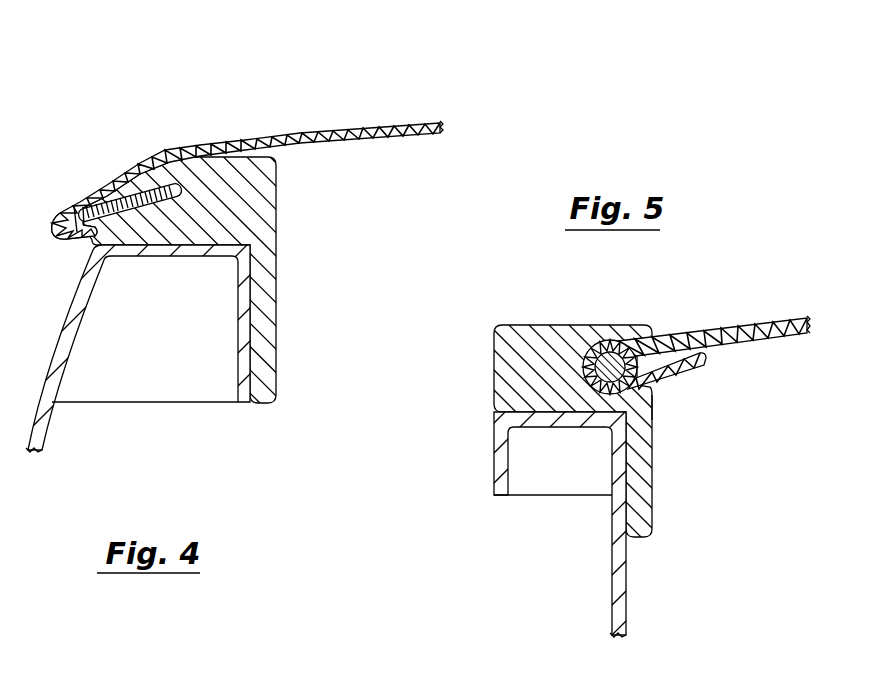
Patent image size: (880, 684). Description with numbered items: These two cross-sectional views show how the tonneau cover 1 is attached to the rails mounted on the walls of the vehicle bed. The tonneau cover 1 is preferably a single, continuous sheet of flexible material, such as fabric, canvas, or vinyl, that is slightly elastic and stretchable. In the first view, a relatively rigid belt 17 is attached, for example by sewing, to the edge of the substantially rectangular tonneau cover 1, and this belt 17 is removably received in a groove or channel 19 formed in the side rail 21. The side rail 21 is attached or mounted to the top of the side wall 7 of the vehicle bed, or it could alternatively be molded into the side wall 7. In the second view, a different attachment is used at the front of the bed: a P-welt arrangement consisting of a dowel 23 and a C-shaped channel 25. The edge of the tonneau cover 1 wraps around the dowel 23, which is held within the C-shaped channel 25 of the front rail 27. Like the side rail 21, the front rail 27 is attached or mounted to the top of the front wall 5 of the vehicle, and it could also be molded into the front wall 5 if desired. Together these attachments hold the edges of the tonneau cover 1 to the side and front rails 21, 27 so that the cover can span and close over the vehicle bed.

In FIG. 4, the tonneau cover 1 is at (246, 131).
In FIG. 5, the tonneau cover 1 is at (754, 315).
In FIG. 4, the belt 17 is at (137, 167).
In FIG. 4, the channel 19 is at (137, 235).
In FIG. 4, the side rail 21 is at (248, 203).
In FIG. 4, the side wall 7 is at (170, 362).
In FIG. 5, the dowel 23 is at (610, 350).
In FIG. 5, the C-shaped channel 25 is at (655, 406).
In FIG. 5, the front rail 27 is at (533, 371).
In FIG. 5, the front wall 5 is at (610, 568).